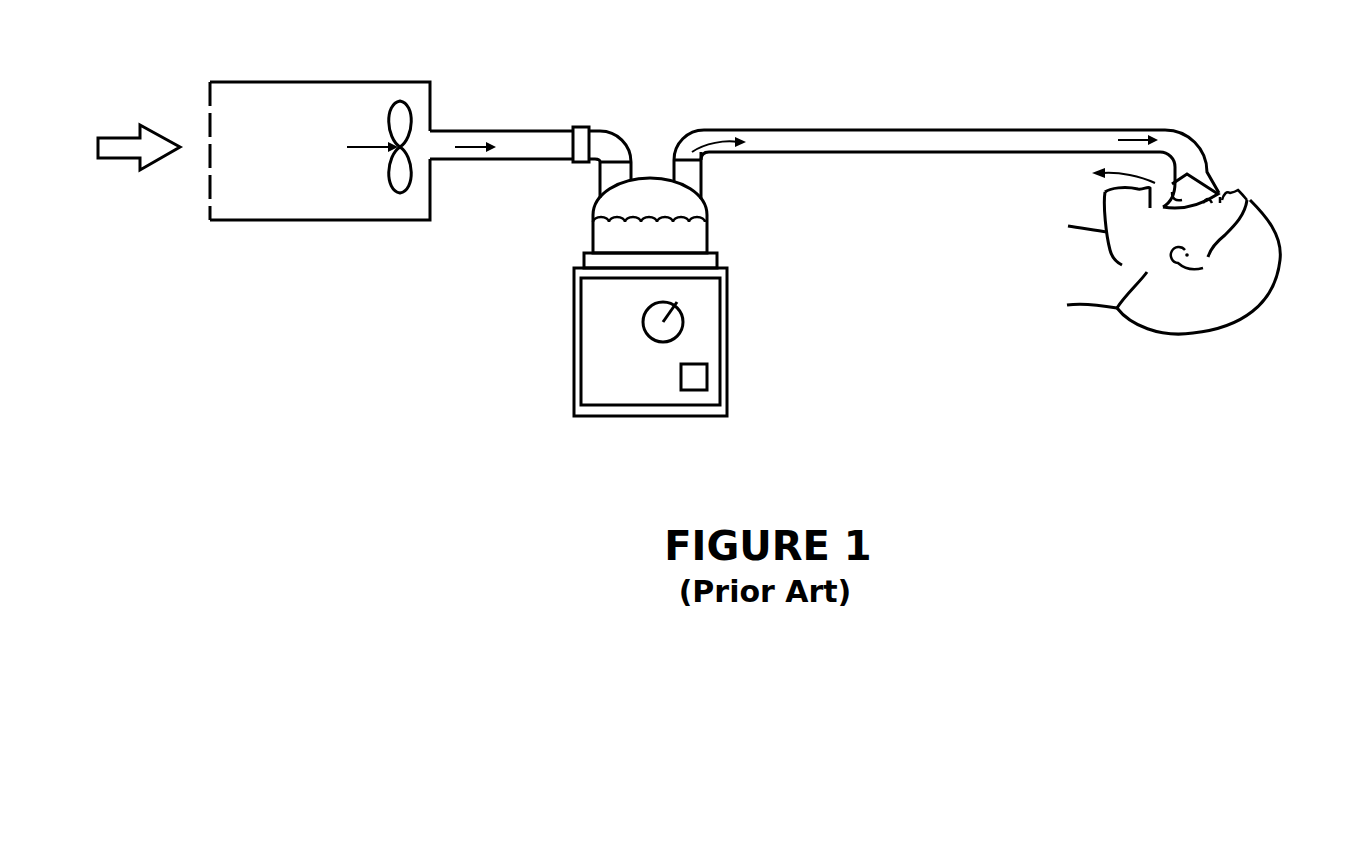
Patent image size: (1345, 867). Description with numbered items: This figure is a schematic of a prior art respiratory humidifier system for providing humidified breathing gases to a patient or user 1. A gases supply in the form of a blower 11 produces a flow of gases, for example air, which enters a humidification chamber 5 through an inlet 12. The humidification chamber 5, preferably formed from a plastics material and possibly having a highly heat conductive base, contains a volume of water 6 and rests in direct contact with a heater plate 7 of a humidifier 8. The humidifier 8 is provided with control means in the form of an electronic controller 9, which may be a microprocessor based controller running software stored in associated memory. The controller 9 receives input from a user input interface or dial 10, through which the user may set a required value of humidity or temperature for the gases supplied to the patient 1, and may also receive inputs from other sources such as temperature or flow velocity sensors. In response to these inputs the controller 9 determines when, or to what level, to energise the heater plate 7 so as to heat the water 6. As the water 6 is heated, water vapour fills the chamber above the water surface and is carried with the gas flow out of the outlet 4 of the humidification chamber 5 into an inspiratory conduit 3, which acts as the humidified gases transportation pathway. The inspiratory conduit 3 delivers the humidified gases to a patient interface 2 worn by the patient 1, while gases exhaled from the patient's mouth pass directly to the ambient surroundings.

The patient or user 1 is at (1262, 232).
The patient interface 2 is at (1202, 173).
The inspiratory conduit 3 is at (933, 137).
The outlet 4 is at (687, 168).
The humidification chamber 5 is at (697, 210).
The water 6 is at (600, 233).
The heater plate 7 is at (704, 262).
The humidifier 8 is at (725, 315).
The electronic controller 9 is at (697, 380).
The dial 10 is at (648, 325).
The blower 11 is at (292, 107).
The inlet 12 is at (613, 170).